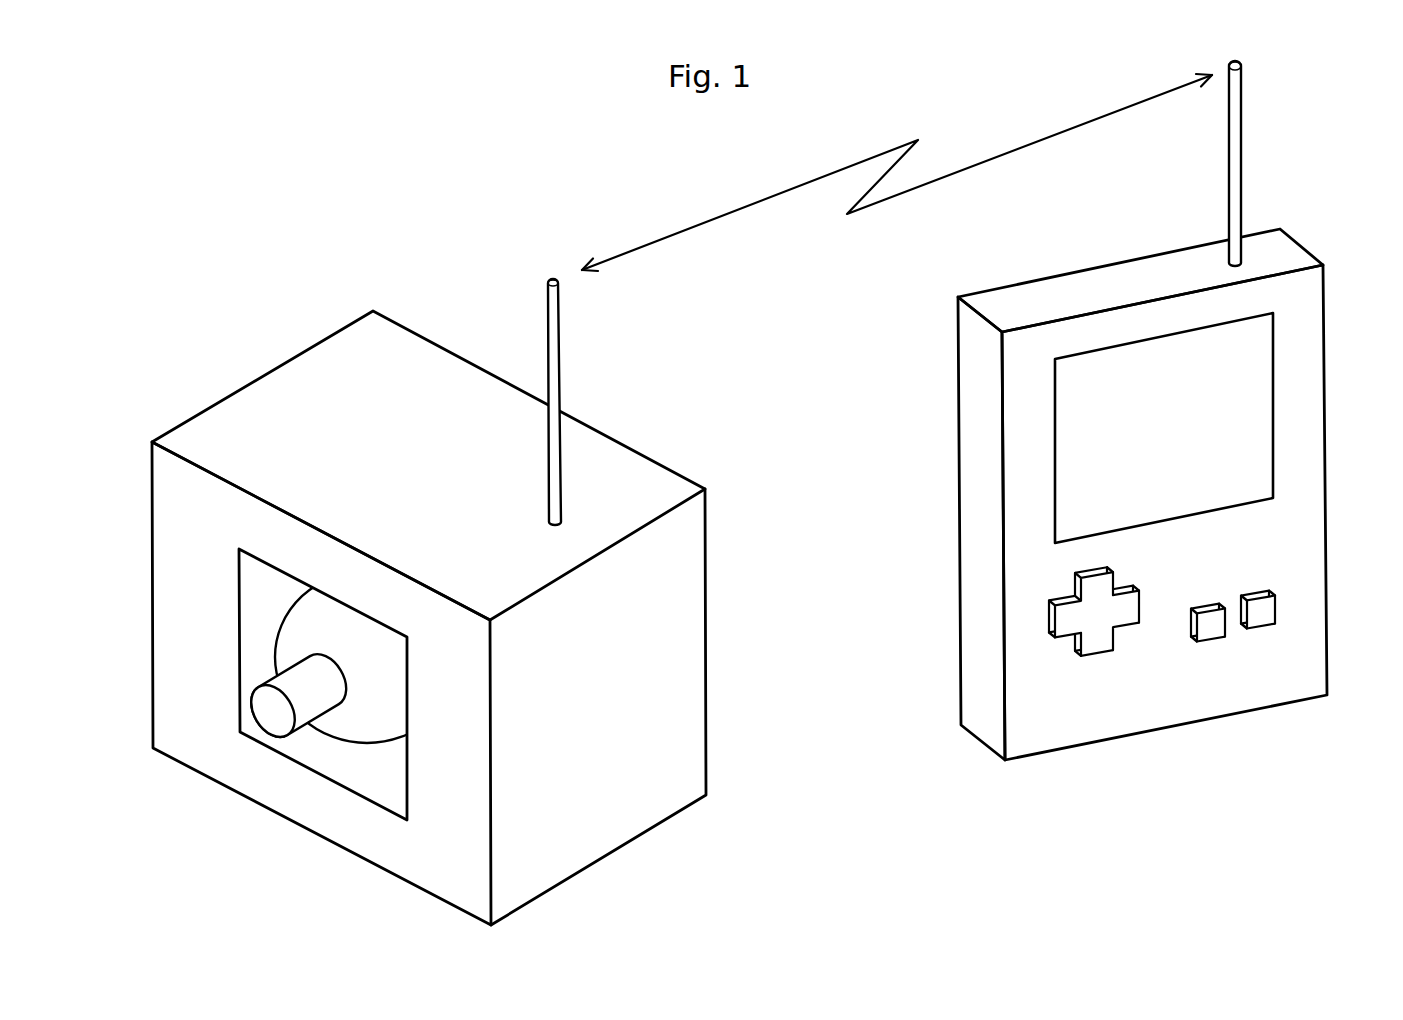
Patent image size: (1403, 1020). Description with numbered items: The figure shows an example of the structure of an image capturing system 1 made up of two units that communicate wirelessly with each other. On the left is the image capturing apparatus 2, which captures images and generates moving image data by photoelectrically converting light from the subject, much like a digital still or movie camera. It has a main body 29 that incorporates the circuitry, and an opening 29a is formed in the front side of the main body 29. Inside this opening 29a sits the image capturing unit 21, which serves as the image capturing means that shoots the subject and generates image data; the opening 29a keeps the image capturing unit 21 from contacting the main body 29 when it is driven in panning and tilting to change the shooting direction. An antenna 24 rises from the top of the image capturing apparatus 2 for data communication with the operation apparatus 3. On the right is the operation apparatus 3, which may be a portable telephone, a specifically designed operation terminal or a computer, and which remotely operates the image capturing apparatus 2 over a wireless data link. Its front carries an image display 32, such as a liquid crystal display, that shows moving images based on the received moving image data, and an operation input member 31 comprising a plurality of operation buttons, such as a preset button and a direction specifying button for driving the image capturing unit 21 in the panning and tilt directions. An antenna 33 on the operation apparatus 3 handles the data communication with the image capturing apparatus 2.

The image capturing system 1 is at (265, 180).
The image capturing apparatus 2 is at (301, 357).
The operation apparatus 3 is at (1328, 458).
The image capturing unit 21 is at (263, 652).
The antenna 24 is at (553, 323).
The main body 29 is at (707, 660).
The opening 29a is at (297, 765).
The operation input member 31 is at (1153, 653).
The image display 32 is at (1247, 408).
The antenna 33 is at (1241, 137).